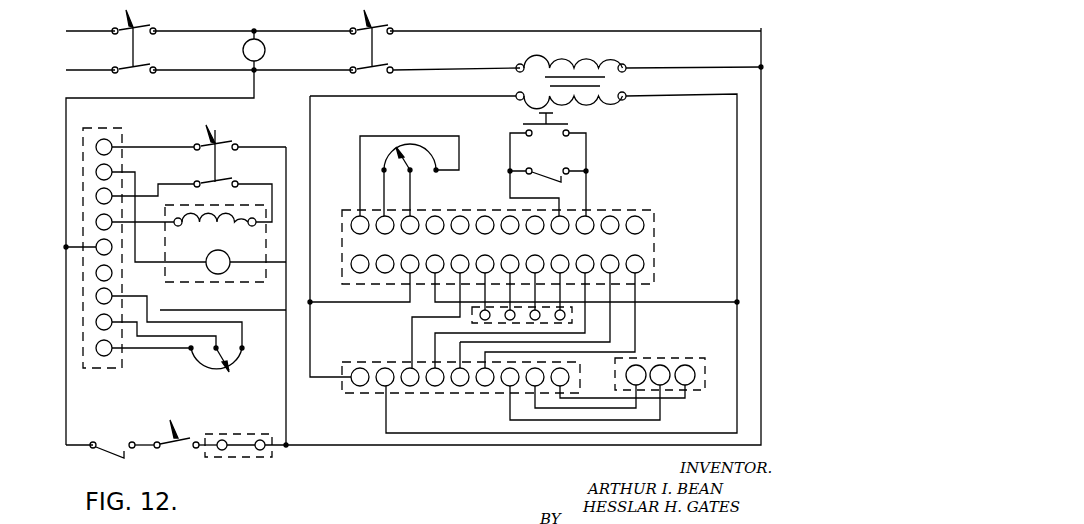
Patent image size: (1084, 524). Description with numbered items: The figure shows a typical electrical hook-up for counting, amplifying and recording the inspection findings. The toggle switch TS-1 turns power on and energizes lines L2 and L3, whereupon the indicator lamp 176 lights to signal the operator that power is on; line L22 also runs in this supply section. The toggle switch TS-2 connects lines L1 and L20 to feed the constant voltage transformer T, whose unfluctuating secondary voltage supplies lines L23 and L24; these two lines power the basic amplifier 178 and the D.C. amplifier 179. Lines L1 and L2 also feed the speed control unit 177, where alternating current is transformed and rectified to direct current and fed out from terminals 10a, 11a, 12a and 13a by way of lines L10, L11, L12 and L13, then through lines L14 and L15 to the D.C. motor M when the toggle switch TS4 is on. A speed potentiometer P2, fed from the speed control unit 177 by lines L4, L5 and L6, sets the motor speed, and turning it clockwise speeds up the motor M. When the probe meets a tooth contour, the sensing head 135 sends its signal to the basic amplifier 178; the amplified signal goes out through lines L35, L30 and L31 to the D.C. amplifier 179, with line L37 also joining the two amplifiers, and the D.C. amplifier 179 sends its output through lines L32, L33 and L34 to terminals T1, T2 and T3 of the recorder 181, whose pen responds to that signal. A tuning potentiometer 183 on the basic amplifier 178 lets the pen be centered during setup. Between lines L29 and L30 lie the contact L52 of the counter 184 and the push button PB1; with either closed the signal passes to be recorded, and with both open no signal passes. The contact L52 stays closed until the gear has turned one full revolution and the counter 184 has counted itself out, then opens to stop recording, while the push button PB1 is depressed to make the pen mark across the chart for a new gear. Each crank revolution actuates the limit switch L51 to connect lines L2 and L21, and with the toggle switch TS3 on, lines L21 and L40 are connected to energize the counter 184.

The indicator lamp 176 is at (242, 50).
The speed control unit 177 is at (122, 368).
The basic amplifier 178 is at (659, 216).
The D.C. amplifier 179 is at (338, 380).
The recorder 181 is at (693, 390).
The tuning potentiometer 183 is at (412, 152).
The counter 184 is at (240, 457).
The sensing head 135 is at (566, 323).
The toggle switch TS-1 is at (120, 41).
The toggle switch TS-2 is at (359, 41).
The toggle switch TS3 is at (176, 445).
The off and on toggle switch TS4 is at (206, 156).
The constant voltage transformer T is at (569, 82).
The push button PB1 is at (558, 120).
The speed potentiometer P2 is at (216, 370).
The D.C. motor M is at (225, 243).
The recorder terminal T1 is at (642, 365).
The recorder terminal T2 is at (665, 365).
The recorder terminal T3 is at (690, 365).
The speed control unit terminal 10a is at (96, 147).
The speed control unit terminal 11a is at (96, 172).
The speed control unit terminal 12a is at (96, 196).
The speed control unit terminal 13a is at (96, 222).
The line L1 is at (769, 95).
The line L2 is at (76, 455).
The line L3 is at (222, 30).
The line L4 is at (206, 323).
The line L5 is at (195, 337).
The line L6 is at (184, 350).
The line L10 is at (176, 147).
The line L11 is at (203, 259).
The line L12 is at (148, 178).
The line L13 is at (138, 214).
The line L14 is at (250, 136).
The line L15 is at (250, 176).
The line L20 is at (450, 69).
The line L21 is at (145, 444).
The line L22 is at (698, 67).
The line L23 is at (452, 95).
The line L24 is at (697, 95).
The line L29 is at (511, 158).
The line L30 is at (589, 162).
The line L31 is at (488, 357).
The line L32 is at (595, 425).
The line L33 is at (598, 413).
The line L34 is at (620, 401).
The line L35 is at (387, 318).
The line L37 is at (403, 334).
The line L40 is at (203, 445).
The limit switch L51 is at (112, 439).
The counter contact L52 is at (547, 165).